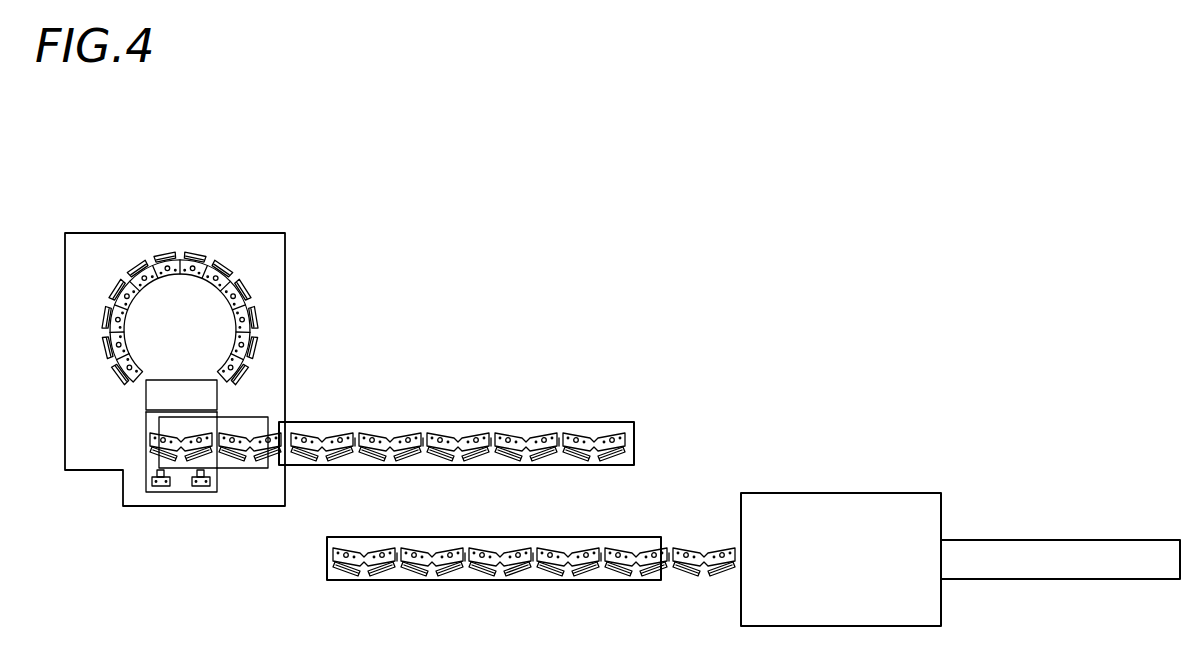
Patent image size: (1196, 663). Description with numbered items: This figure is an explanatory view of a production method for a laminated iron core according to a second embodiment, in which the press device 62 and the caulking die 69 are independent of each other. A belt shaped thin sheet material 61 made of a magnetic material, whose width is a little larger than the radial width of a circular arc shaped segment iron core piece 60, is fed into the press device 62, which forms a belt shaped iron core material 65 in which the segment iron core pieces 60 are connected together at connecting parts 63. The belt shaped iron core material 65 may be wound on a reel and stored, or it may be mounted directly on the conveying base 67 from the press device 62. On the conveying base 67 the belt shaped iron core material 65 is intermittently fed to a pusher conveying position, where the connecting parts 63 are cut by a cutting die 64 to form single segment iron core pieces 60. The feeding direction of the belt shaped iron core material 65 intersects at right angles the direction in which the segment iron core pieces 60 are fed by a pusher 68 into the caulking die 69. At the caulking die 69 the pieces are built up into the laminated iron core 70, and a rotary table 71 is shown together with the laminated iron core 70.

The segment iron core piece 60 is at (518, 430).
The belt shaped thin sheet material 61 is at (1072, 550).
The press device 62 is at (845, 507).
The connecting part 63 is at (490, 443).
The cutting die 64 is at (218, 470).
The belt shaped iron core material 65 is at (390, 425).
The conveying base 67 is at (315, 430).
The pusher 68 is at (197, 495).
The caulking die 69 is at (182, 372).
The laminated iron core 70 is at (205, 262).
The rotary table 71 is at (177, 305).